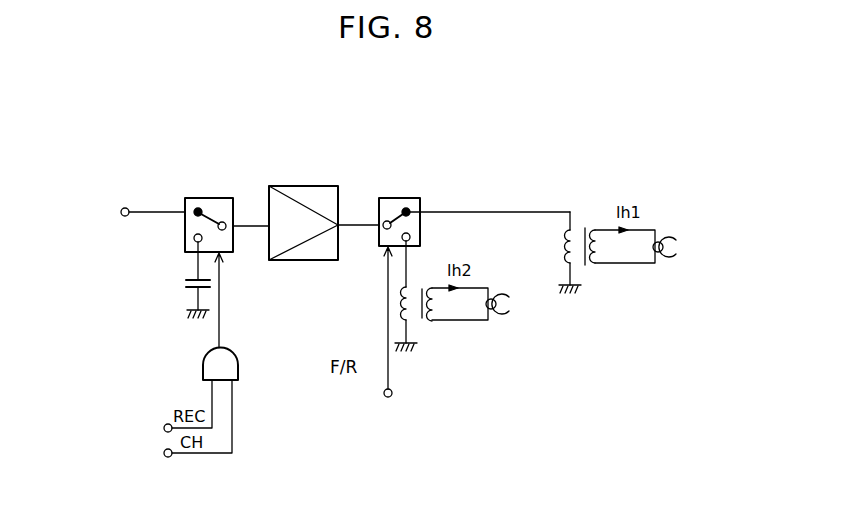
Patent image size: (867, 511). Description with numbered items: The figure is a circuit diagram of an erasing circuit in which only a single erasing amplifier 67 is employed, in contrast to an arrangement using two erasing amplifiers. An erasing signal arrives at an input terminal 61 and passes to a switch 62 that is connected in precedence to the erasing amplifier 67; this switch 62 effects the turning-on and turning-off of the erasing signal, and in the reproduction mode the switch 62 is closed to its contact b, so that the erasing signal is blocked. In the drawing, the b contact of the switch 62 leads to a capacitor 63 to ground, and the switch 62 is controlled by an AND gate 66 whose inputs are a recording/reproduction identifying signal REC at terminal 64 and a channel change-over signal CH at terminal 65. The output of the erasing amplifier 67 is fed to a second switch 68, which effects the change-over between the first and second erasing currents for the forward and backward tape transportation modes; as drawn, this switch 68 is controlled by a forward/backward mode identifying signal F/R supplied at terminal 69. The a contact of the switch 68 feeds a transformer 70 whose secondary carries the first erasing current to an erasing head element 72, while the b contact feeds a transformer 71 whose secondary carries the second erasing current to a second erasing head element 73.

The input terminal 61 is at (122, 209).
The switch 62 is at (214, 197).
The capacitor 63 is at (186, 284).
The REC signal terminal 64 is at (164, 426).
The CH signal terminal 65 is at (164, 453).
The AND gate 66 is at (229, 366).
The erasing amplifier 67 is at (305, 185).
The switch 68 is at (393, 197).
The F/R signal terminal 69 is at (392, 397).
The first transformer 70 is at (587, 226).
The second transformer 71 is at (425, 327).
The first heater element 72 is at (680, 246).
The second heater element 73 is at (512, 305).